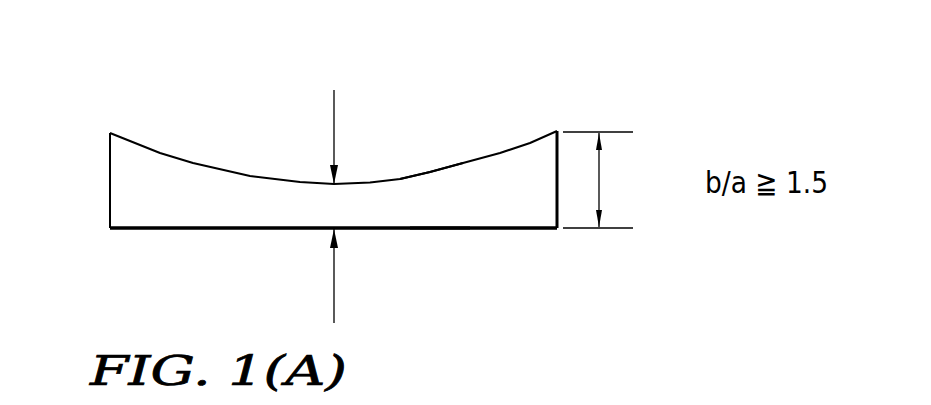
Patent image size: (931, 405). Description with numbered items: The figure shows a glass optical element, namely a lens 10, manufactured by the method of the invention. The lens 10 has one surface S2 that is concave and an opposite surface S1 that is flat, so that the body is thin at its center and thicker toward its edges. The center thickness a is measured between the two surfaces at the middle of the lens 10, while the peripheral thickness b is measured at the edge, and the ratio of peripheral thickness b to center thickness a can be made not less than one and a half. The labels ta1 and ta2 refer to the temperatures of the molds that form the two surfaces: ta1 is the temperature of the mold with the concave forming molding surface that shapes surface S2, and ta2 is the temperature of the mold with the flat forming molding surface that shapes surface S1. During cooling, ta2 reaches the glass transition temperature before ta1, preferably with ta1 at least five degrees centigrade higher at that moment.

The lens 10 is at (333, 177).
The concave surface S2 is at (193, 163).
The flat surface S1 is at (185, 230).
The temperature of the mold with a concave forming molding surface ta1 is at (425, 173).
The temperature of the mold with a flat forming molding surface ta2 is at (435, 230).
The center thickness a is at (343, 206).
The peripheral thickness b is at (598, 180).